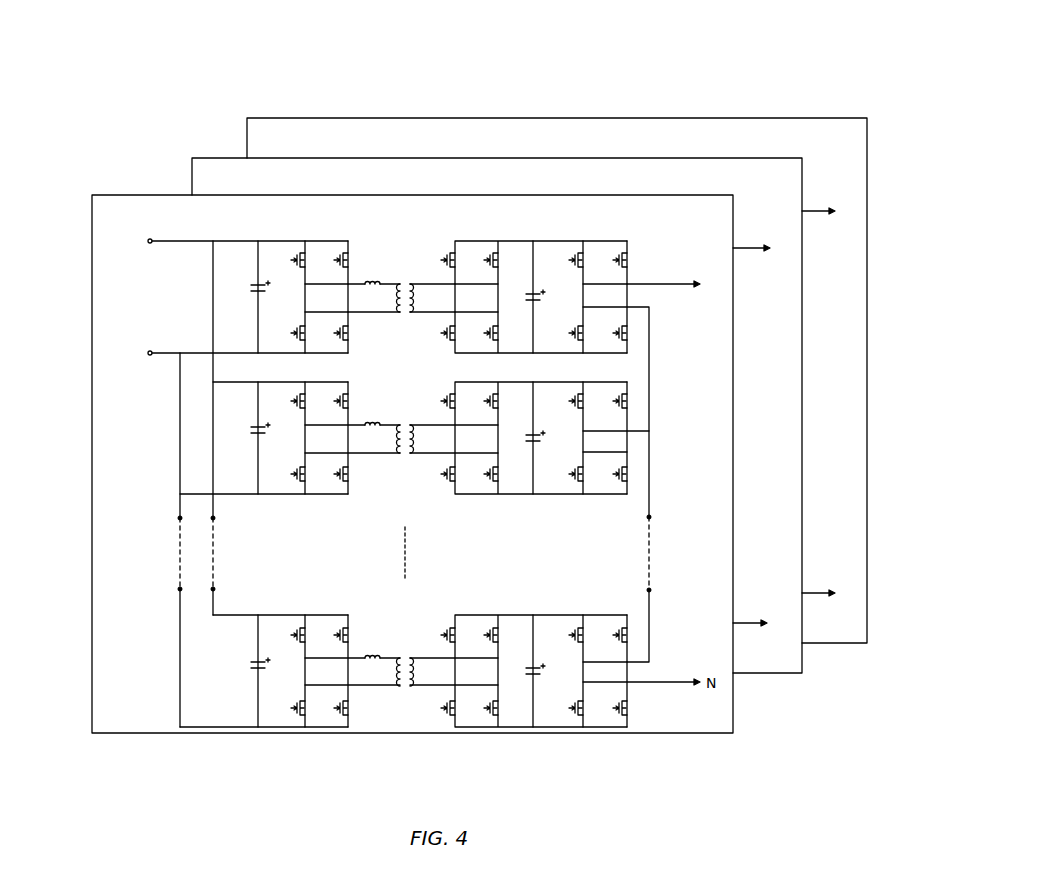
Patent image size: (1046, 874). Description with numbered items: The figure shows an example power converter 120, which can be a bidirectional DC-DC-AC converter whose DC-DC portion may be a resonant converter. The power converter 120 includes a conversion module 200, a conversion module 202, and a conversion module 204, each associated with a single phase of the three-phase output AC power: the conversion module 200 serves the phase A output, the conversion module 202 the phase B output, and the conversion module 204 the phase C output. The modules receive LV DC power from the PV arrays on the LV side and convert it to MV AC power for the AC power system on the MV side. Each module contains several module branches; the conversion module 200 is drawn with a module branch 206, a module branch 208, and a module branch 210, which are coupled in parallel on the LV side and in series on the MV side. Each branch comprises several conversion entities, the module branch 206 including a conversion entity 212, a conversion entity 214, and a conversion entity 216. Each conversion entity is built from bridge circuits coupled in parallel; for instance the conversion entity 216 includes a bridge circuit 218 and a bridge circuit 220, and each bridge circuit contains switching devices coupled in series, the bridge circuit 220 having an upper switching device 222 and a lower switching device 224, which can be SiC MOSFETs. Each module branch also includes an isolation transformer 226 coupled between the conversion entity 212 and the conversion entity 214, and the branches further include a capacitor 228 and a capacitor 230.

The power converter 120 is at (697, 86).
The conversion module 200 is at (87, 228).
The conversion module 202 is at (215, 158).
The conversion module 204 is at (278, 118).
The module branch 206 is at (222, 240).
The module branch 208 is at (238, 495).
The module branch 210 is at (238, 614).
The conversion entity 212 is at (352, 236).
The conversion entity 214 is at (502, 236).
The conversion entity 216 is at (632, 236).
The bridge circuit 218 is at (566, 288).
The bridge circuit 220 is at (628, 283).
The upper switching device 222 is at (633, 262).
The lower switching device 224 is at (633, 323).
The isolation transformer 226 is at (393, 318).
The capacitor 228 is at (256, 292).
The capacitor 230 is at (533, 305).